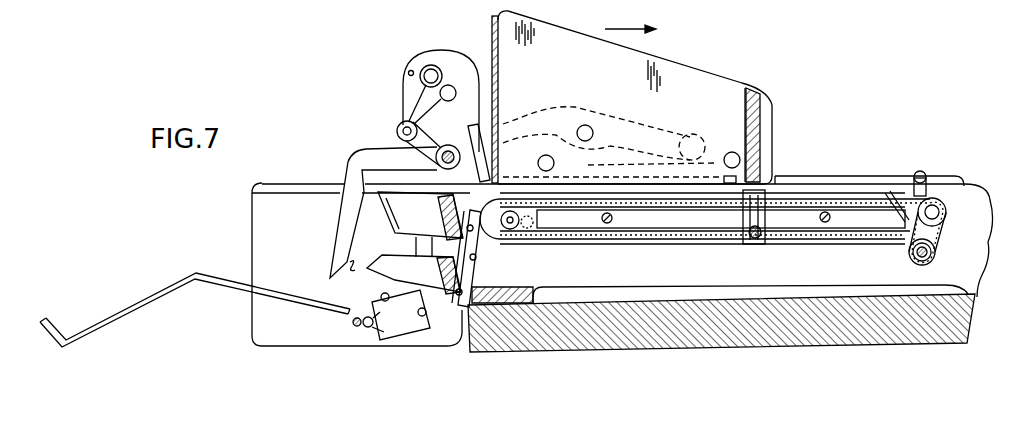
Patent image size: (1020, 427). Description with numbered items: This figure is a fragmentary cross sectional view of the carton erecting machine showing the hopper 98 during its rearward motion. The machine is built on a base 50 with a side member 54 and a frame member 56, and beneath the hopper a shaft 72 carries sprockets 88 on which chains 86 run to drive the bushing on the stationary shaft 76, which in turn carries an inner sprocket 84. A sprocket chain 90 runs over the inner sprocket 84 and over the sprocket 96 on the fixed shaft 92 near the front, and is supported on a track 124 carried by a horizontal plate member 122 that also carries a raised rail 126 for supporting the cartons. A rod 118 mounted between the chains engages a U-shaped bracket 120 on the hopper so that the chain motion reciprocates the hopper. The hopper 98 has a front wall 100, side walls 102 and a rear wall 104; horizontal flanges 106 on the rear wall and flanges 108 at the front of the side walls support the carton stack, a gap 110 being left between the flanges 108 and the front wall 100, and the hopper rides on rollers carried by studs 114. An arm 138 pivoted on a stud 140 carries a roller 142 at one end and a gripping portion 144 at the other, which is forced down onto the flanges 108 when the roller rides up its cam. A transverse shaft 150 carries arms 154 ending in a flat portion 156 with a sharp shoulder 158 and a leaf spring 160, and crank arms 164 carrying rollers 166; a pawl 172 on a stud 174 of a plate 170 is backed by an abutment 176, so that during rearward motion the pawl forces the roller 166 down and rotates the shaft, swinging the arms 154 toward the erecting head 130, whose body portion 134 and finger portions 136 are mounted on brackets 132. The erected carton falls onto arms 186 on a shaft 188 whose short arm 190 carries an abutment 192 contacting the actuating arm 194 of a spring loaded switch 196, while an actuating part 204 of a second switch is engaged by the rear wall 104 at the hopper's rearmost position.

The machine base 50 is at (703, 338).
The side member 54 is at (846, 277).
The frame member 56 is at (540, 292).
The shaft 72 is at (930, 260).
The stationary shaft 76 is at (946, 212).
The inner sprocket 84 is at (937, 205).
The chain 86 is at (936, 252).
The sprocket 88 is at (906, 256).
The sprocket chain 90 is at (670, 239).
The fixed shaft 92 is at (519, 228).
The sprocket 96 is at (534, 227).
The hopper 98 is at (567, 40).
The front wall 100 is at (494, 28).
The side wall 102 is at (703, 78).
The rear wall 104 is at (763, 138).
The horizontal flange 106 is at (745, 152).
The flange 108 is at (587, 190).
The gap 110 is at (538, 173).
The stud 114 is at (731, 153).
The rod 118 is at (753, 240).
The U-shaped bracket 120 is at (740, 240).
The horizontal plate member 122 is at (805, 230).
The track 124 is at (865, 230).
The raised rail 126 is at (843, 190).
The erecting head 130 is at (374, 284).
The bracket 132 is at (466, 255).
The body portion 134 is at (455, 276).
The finger portion 136 is at (431, 217).
The arm 138 is at (556, 118).
The stud 140 is at (588, 126).
The roller 142 is at (690, 134).
The gripping portion 144 is at (548, 132).
The transverse shaft 150 is at (449, 150).
The arm 154 is at (358, 160).
The flat portion 156 is at (332, 272).
The shoulder 158 is at (349, 260).
The leaf spring 160 is at (357, 224).
The crank arm 164 is at (425, 143).
The roller 166 is at (398, 125).
The plate 170 is at (412, 62).
The pawl 172 is at (420, 95).
The stud 174 is at (428, 66).
The abutment 176 is at (451, 85).
The arm 186 is at (146, 311).
The shaft 188 is at (357, 328).
The short arm 190 is at (352, 323).
The abutment 192 is at (380, 332).
The actuating arm 194 is at (417, 318).
The spring loaded switch 196 is at (438, 318).
The actuating part 204 is at (925, 165).